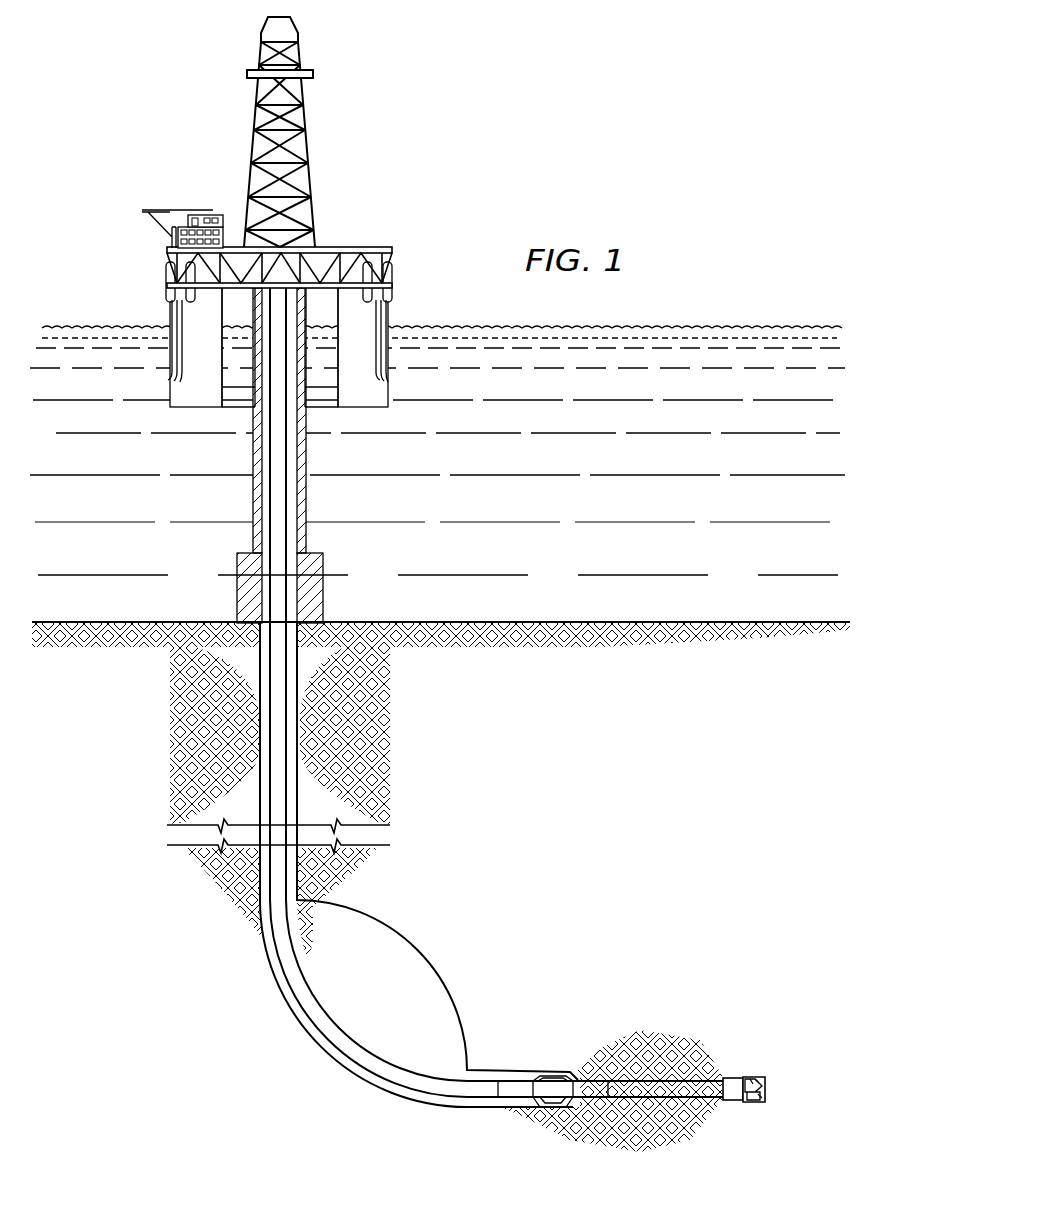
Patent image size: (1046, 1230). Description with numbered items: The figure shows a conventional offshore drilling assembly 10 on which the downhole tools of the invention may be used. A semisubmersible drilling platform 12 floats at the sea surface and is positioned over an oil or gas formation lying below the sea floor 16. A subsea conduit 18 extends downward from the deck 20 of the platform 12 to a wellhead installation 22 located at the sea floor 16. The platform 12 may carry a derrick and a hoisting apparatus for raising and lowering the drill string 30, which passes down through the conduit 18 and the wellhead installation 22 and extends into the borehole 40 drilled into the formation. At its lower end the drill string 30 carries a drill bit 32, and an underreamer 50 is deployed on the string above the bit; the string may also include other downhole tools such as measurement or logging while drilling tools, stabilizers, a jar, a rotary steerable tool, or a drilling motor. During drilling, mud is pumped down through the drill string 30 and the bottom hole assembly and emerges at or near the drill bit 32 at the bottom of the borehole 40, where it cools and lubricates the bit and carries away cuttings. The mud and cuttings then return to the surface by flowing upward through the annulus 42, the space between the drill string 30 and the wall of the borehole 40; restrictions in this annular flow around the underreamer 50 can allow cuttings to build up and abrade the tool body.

The offshore drilling assembly 10 is at (375, 143).
The semisubmersible drilling platform 12 is at (382, 247).
The sea floor 16 is at (540, 622).
The subsea conduit 18 is at (307, 497).
The deck 20 is at (387, 282).
The wellhead installation 22 is at (318, 553).
The drill string 30 is at (280, 422).
The drill bit 32 is at (735, 1078).
The borehole 40 is at (258, 717).
The annulus 42 is at (296, 695).
The underreamer 50 is at (517, 1079).